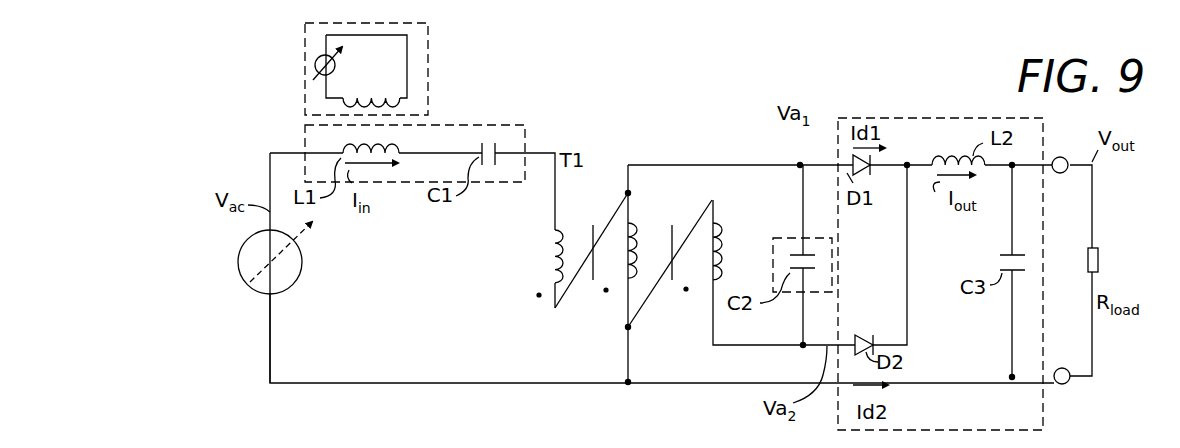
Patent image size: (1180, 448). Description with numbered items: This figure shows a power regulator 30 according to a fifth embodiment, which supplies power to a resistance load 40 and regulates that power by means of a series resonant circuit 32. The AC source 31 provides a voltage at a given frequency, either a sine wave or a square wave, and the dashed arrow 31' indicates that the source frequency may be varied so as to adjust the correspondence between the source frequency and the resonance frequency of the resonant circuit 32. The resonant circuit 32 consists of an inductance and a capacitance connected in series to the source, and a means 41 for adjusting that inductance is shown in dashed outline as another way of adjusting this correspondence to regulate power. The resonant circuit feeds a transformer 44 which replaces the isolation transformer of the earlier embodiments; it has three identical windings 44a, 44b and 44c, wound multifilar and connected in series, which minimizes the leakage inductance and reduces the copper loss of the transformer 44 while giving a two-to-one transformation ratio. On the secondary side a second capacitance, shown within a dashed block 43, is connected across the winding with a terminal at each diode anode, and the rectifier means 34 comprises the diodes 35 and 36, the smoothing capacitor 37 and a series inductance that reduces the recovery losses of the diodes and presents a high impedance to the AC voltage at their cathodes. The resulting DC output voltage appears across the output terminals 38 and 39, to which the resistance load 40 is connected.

The power regulator 30 is at (258, 88).
The AC source 31 is at (283, 264).
The variable AC source 31' is at (246, 333).
The series resonant circuit 32 is at (479, 127).
The rectifier means 34 is at (960, 123).
The diode 35 is at (877, 158).
The diode 36 is at (867, 335).
The smoothing capacitor 37 is at (1000, 255).
The output terminal 38 is at (1062, 157).
The output terminal 39 is at (1066, 386).
The resistance load 40 is at (1102, 253).
The means for adjusting the inductance 41 is at (418, 58).
The resonant capacitor network 43 is at (802, 241).
The transformer 44 is at (640, 183).
The transformer winding 44a is at (546, 264).
The transformer winding 44b is at (626, 276).
The transformer winding 44c is at (721, 238).